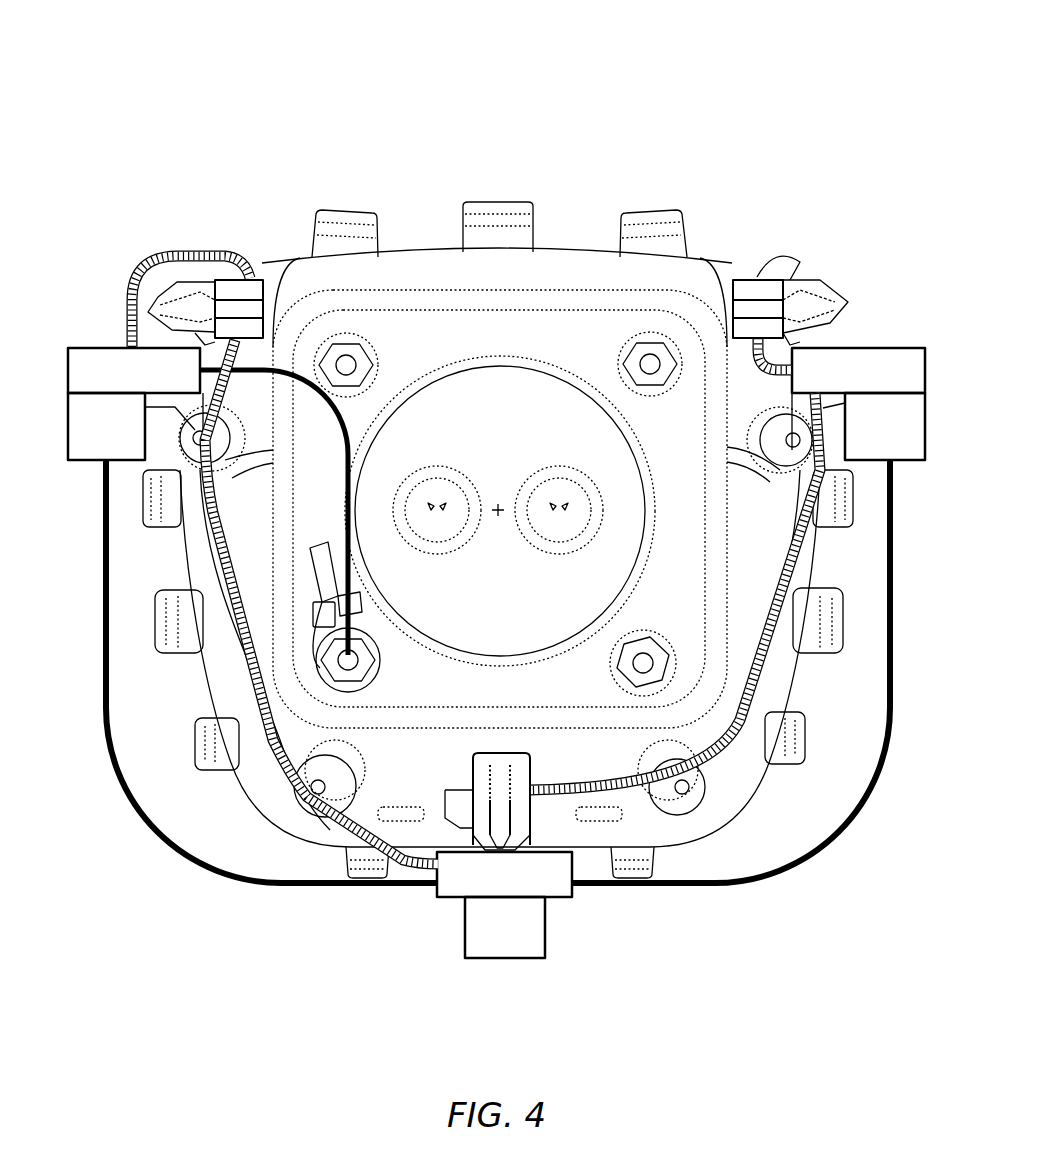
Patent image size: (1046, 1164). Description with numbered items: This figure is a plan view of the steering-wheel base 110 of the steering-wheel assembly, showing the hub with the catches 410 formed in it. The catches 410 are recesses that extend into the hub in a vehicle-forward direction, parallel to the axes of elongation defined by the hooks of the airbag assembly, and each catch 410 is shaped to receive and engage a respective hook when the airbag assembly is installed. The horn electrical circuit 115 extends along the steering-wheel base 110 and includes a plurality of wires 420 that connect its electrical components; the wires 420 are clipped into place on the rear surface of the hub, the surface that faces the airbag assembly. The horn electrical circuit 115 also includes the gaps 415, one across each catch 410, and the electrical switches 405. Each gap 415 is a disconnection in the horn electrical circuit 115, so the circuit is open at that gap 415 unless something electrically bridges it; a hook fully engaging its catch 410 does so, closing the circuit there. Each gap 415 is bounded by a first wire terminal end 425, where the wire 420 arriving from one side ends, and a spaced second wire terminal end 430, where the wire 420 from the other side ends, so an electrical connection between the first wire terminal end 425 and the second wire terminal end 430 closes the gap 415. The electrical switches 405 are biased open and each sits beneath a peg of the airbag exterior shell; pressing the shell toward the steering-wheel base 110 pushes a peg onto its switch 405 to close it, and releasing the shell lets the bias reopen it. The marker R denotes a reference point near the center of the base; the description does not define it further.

The steering-wheel base 110 is at (791, 74).
The horn electrical circuit 115 is at (907, 604).
The electrical switch 405 is at (77, 462).
The catch 410 is at (172, 300).
The gap 415 is at (257, 310).
The wire 420 is at (227, 663).
The first wire terminal end 425 is at (250, 280).
The second wire terminal end 430 is at (262, 330).
The center reference point R is at (498, 506).